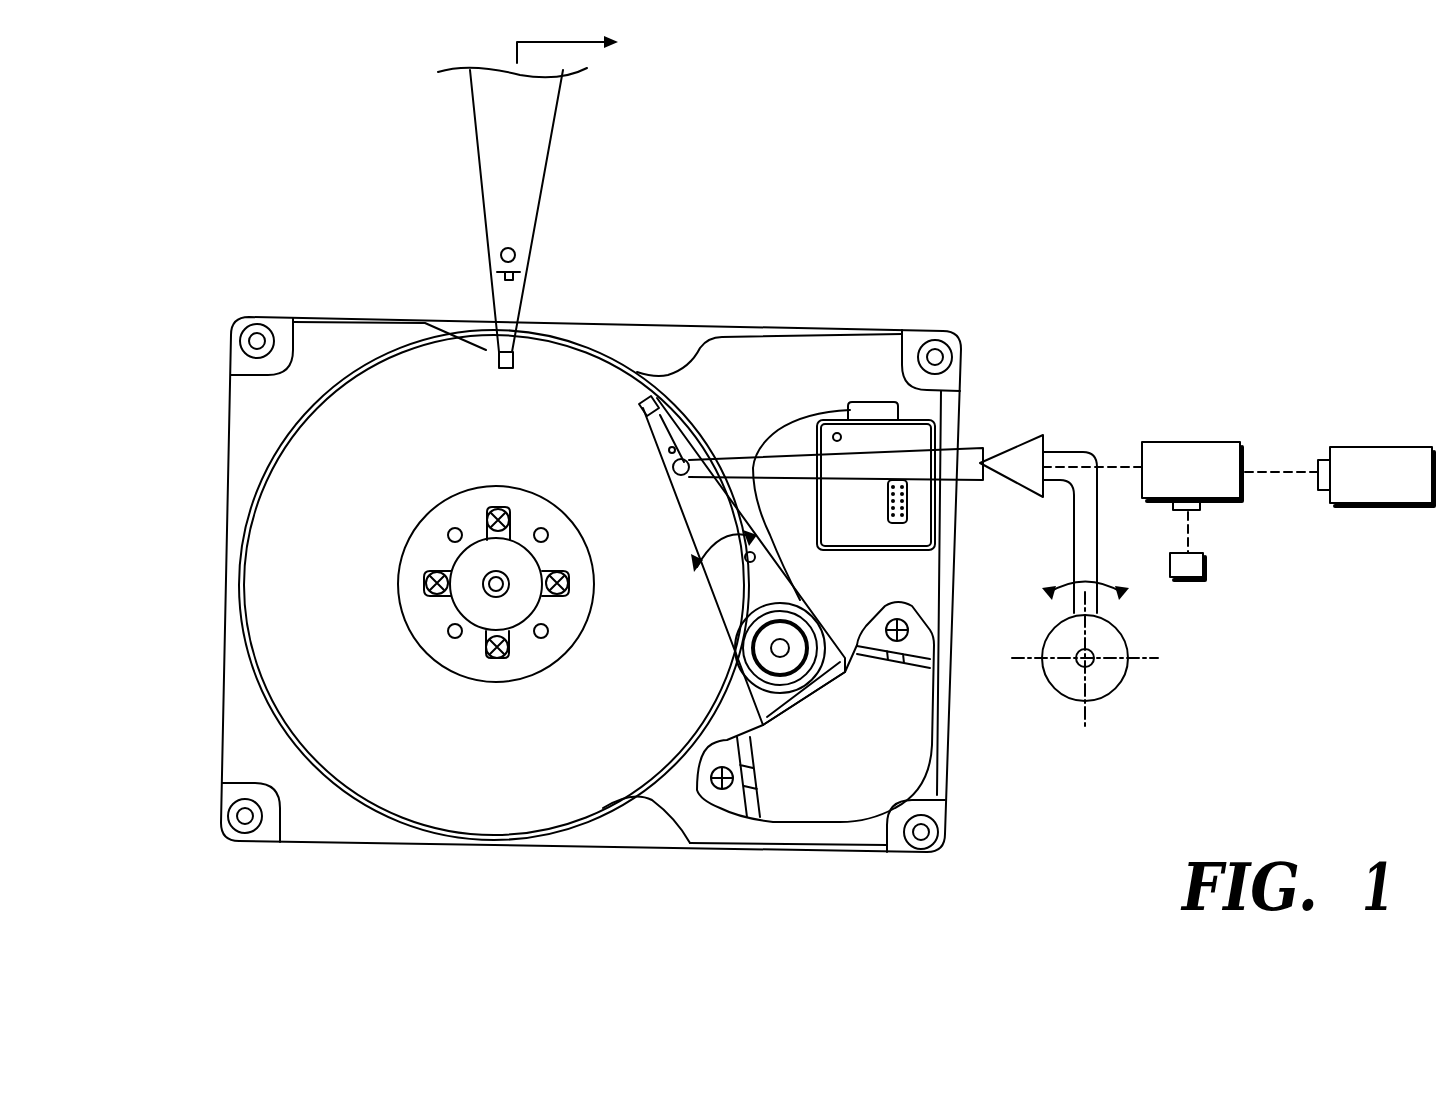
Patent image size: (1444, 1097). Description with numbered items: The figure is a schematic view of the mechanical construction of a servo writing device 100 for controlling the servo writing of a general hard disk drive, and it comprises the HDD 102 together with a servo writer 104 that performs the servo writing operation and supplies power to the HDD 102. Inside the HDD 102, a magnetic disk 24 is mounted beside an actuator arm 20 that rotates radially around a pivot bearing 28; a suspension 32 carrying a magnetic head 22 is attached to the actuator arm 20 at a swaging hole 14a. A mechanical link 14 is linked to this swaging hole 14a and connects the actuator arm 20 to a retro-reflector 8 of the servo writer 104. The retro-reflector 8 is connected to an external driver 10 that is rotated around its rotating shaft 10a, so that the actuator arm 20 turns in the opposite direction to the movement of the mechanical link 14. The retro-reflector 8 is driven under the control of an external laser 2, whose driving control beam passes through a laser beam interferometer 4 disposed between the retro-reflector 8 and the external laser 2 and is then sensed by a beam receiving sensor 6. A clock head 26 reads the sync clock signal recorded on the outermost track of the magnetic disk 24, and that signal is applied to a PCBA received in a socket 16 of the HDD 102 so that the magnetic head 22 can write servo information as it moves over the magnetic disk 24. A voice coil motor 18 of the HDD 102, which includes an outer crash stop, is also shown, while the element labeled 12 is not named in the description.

The servo writing device 100 is at (299, 172).
The HDD 102 is at (356, 850).
The servo writer 104 is at (1150, 350).
The external laser 2 is at (1383, 447).
The laser beam interferometer 4 is at (1192, 442).
The beam receiving sensor 6 is at (1205, 567).
The retro-reflector 8 is at (1020, 443).
The external driver 10 is at (1122, 638).
The rotating shaft 10a is at (1095, 665).
The voice coil motor 12 is at (800, 421).
The mechanical link 14 is at (969, 458).
The swaging hole 14a is at (673, 466).
The socket 16 is at (908, 500).
The voice coil motor (VCM) 18 is at (925, 700).
The actuator arm 20 is at (718, 600).
The magnetic head 22 is at (662, 404).
The magnetic disk 24 is at (272, 554).
The clock head 26 is at (496, 357).
The pivot bearing 28 is at (780, 649).
The suspension 32 is at (668, 436).